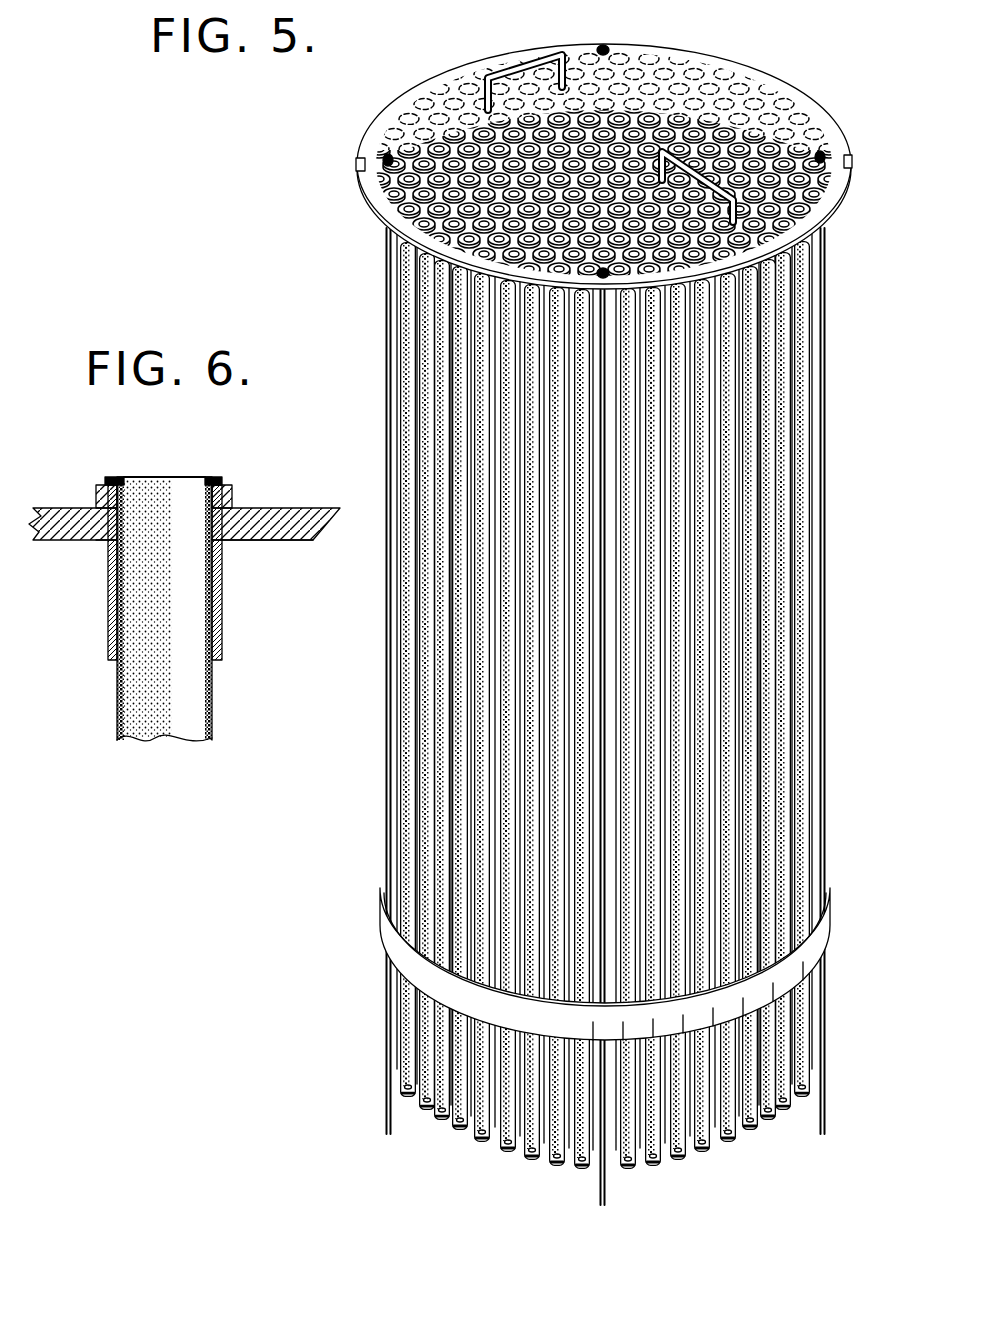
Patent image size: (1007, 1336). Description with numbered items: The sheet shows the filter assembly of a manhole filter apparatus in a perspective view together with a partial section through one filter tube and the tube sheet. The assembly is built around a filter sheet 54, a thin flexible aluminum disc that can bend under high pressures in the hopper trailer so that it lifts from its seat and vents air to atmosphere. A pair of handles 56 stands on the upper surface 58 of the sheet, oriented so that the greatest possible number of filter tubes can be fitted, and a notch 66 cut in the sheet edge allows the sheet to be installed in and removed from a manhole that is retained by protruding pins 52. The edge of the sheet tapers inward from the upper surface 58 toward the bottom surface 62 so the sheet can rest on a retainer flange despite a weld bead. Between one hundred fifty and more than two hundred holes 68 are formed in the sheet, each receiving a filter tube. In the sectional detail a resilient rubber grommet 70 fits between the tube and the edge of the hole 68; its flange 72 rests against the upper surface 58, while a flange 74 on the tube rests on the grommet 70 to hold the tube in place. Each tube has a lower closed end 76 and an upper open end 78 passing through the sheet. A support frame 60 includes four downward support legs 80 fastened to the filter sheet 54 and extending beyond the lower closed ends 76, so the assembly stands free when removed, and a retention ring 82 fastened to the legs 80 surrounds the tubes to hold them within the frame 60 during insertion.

In FIG. 5, the protruding pins 52 is at (440, 657).
In FIG. 6, the protruding pins 52 is at (212, 697).
In FIG. 5, the filter sheet 54 is at (830, 102).
In FIG. 5, the handles 56 is at (507, 73).
In FIG. 5, the upper surface 58 is at (777, 82).
In FIG. 6, the upper surface 58 is at (313, 508).
In FIG. 5, the support frame 60 is at (836, 910).
In FIG. 6, the bottom surface 62 is at (273, 541).
In FIG. 5, the notch 66 is at (849, 161).
In FIG. 6, the holes 68 is at (108, 543).
In FIG. 6, the grommet 70 is at (218, 617).
In FIG. 6, the flange 72 is at (97, 491).
In FIG. 6, the flange 74 is at (130, 455).
In FIG. 5, the lower closed end 76 is at (463, 1143).
In FIG. 6, the upper open end 78 is at (197, 455).
In FIG. 5, the support legs 80 is at (386, 1128).
In FIG. 5, the retention ring 82 is at (386, 932).